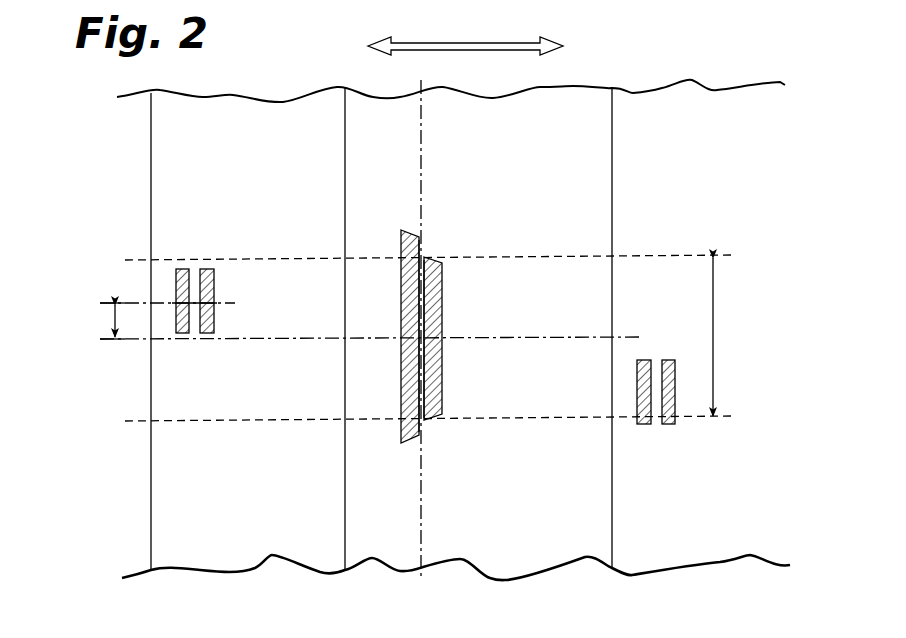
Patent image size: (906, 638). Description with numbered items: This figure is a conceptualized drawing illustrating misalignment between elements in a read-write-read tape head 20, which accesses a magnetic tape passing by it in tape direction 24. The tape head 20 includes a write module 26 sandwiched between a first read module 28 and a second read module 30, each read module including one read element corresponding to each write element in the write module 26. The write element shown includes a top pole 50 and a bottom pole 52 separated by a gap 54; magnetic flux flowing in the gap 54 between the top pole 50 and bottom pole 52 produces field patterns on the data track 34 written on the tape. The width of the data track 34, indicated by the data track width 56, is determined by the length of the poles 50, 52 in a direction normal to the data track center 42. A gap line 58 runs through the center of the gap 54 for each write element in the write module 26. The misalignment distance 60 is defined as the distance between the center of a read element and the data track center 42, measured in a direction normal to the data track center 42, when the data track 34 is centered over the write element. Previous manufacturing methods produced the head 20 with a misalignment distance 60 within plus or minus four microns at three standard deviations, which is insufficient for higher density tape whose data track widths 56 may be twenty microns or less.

The tape head 20 is at (706, 56).
The tape direction 24 is at (492, 51).
The write module 26 is at (505, 582).
The first read module 28 is at (229, 576).
The second read module 30 is at (695, 566).
The data track 34 is at (490, 421).
The data track center 42 is at (456, 340).
The top pole 50 is at (443, 298).
The bottom pole 52 is at (401, 316).
The gap 54 is at (423, 249).
The data track width 56 is at (715, 340).
The gap line 58 is at (416, 170).
The misalignment distance 60 is at (110, 322).